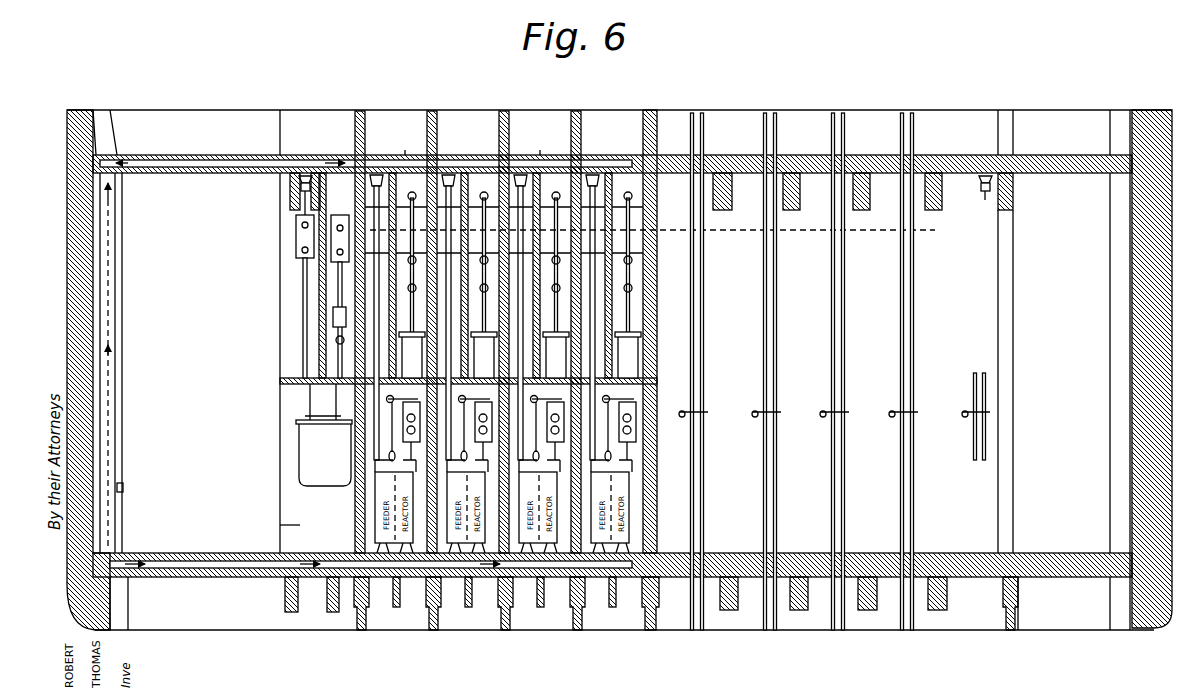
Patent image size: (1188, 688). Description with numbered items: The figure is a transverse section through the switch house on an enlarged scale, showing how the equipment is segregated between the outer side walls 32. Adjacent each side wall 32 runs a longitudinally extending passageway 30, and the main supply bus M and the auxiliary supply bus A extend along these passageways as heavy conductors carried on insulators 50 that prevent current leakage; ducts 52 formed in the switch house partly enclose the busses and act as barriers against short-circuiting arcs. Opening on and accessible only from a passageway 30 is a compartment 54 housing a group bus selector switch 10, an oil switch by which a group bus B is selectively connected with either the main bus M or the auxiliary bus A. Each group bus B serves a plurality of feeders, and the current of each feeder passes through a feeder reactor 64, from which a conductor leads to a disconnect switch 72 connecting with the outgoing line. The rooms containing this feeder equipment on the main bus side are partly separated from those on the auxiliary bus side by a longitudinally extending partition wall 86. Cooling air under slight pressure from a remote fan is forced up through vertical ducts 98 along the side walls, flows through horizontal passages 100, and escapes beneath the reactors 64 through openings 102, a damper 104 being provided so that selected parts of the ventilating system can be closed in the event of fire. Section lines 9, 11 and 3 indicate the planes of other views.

The outer side wall 32 is at (67, 247).
The horizontal passage 100 is at (356, 164).
The vertical duct 98 is at (112, 616).
The longitudinal passageway 30 is at (660, 370).
The partition wall 86 is at (658, 476).
The insulator 50 is at (295, 165).
The duct 52 is at (300, 190).
The auxiliary supply bus A is at (984, 201).
The main supply bus M is at (305, 213).
The group bus selector switch 10 is at (300, 470).
The compartment 54 is at (300, 535).
The disconnect switch 72 is at (636, 409).
The feeder reactor 64 is at (628, 498).
The opening 102 is at (408, 152).
The damper 104 is at (123, 487).
The group bus B is at (807, 236).
The section line 9 is at (305, 133).
The section lines 10- 11 is at (399, 92).
The section line 3 is at (592, 133).